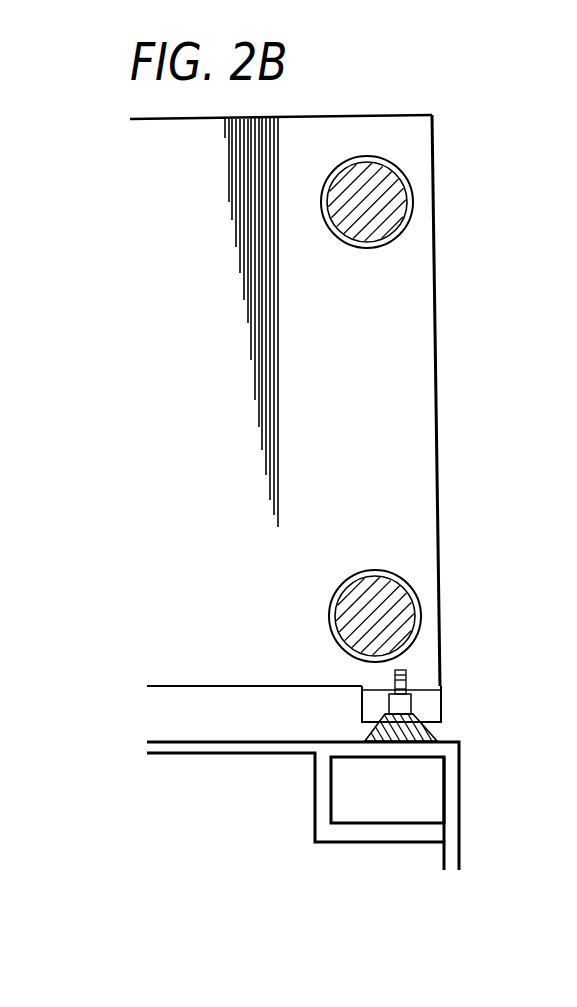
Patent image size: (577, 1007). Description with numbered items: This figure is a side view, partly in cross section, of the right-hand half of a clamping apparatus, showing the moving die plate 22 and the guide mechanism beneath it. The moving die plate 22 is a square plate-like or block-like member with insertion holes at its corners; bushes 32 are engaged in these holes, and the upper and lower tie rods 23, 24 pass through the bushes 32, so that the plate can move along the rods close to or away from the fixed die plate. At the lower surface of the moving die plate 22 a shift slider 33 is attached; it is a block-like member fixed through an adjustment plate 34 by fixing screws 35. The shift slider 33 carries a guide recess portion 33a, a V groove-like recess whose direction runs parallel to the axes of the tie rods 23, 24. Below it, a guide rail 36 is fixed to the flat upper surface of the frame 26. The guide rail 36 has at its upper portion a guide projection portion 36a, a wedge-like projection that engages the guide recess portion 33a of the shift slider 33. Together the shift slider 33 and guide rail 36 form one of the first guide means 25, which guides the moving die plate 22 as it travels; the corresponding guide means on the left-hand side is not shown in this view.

The moving die plate 22 is at (297, 145).
The upper tie rod 23 is at (375, 203).
The lower tie rod 24 is at (388, 613).
The bush 32 is at (368, 250).
The shift slider 33 is at (436, 700).
The guide recess portion 33a is at (391, 732).
The adjustment plate 34 is at (445, 688).
The fixing screw 35 is at (398, 706).
The guide rail 36 is at (410, 733).
The guide projection portion 36a is at (388, 707).
The first guide means 25 is at (468, 712).
The frame 26 is at (454, 807).